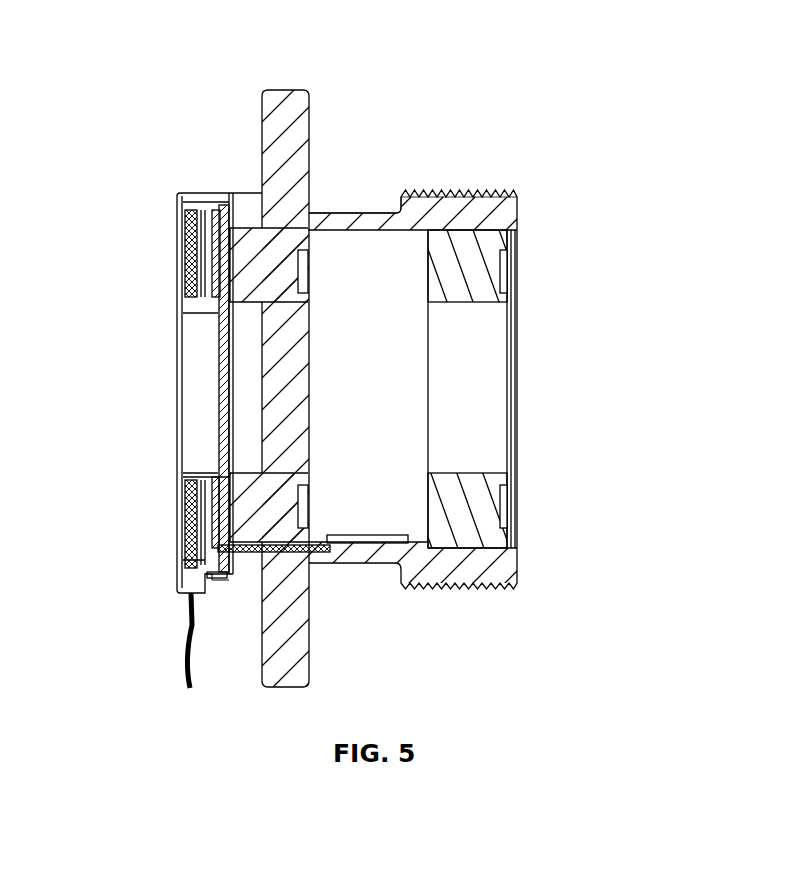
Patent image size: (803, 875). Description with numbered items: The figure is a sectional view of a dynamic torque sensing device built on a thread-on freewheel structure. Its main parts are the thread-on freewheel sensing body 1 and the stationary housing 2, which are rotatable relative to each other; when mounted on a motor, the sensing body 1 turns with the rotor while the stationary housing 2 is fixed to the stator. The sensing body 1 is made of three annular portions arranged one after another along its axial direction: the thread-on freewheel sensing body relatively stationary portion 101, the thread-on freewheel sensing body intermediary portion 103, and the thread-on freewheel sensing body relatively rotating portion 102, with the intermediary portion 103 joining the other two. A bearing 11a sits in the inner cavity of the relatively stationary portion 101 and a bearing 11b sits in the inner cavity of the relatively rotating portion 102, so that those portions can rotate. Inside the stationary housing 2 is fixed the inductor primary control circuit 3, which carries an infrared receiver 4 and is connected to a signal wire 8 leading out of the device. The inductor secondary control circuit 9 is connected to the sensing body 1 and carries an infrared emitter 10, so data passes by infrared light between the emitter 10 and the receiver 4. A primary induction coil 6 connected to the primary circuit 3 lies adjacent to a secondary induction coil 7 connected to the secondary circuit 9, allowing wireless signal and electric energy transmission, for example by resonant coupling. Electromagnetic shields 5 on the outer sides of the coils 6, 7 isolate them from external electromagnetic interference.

The thread-on freewheel sensing body 1 is at (425, 568).
The thread-on freewheel sensing body relatively stationary portion 101 is at (285, 158).
The thread-on freewheel sensing body relatively rotating portion 102 is at (478, 213).
The thread-on freewheel sensing body intermediary portion 103 is at (352, 223).
The bearing 11a is at (273, 262).
The bearing 11b is at (477, 280).
The stationary housing 2 is at (177, 210).
The inductor primary control circuit 3 is at (180, 517).
The infrared receiver 4 is at (203, 227).
The electromagnetic shield 5 is at (200, 520).
The primary induction coil 6 is at (190, 477).
The secondary induction coil 7 is at (208, 473).
The signal wire 8 is at (187, 635).
The inductor secondary control circuit 9 is at (245, 553).
The infrared emitter 10 is at (217, 220).